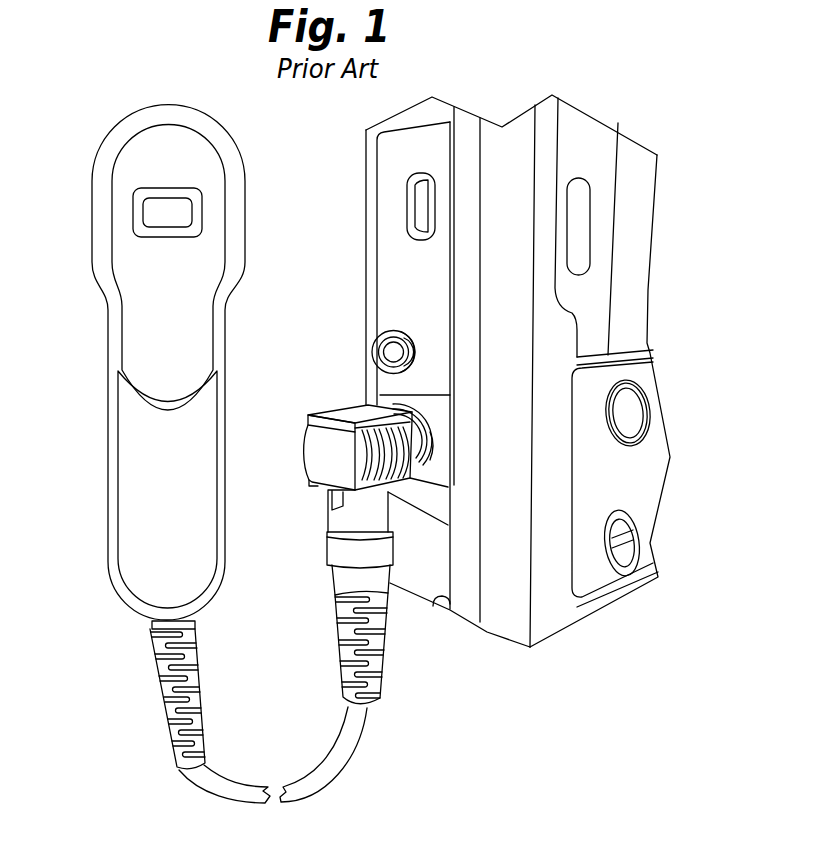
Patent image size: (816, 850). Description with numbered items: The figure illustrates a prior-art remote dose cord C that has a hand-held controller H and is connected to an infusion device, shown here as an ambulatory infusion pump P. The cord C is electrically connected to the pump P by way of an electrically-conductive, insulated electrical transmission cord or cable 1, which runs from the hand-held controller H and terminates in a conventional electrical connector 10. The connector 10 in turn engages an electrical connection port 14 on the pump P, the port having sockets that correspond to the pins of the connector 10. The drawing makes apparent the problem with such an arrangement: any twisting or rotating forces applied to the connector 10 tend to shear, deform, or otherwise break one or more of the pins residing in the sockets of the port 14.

The electrical transmission cord 1 is at (343, 770).
The electrical connector 10 is at (333, 400).
The electrical connection port 14 is at (454, 427).
The remote dose cord C is at (90, 483).
The hand-held controller H is at (245, 190).
The ambulatory infusion pump P is at (660, 272).